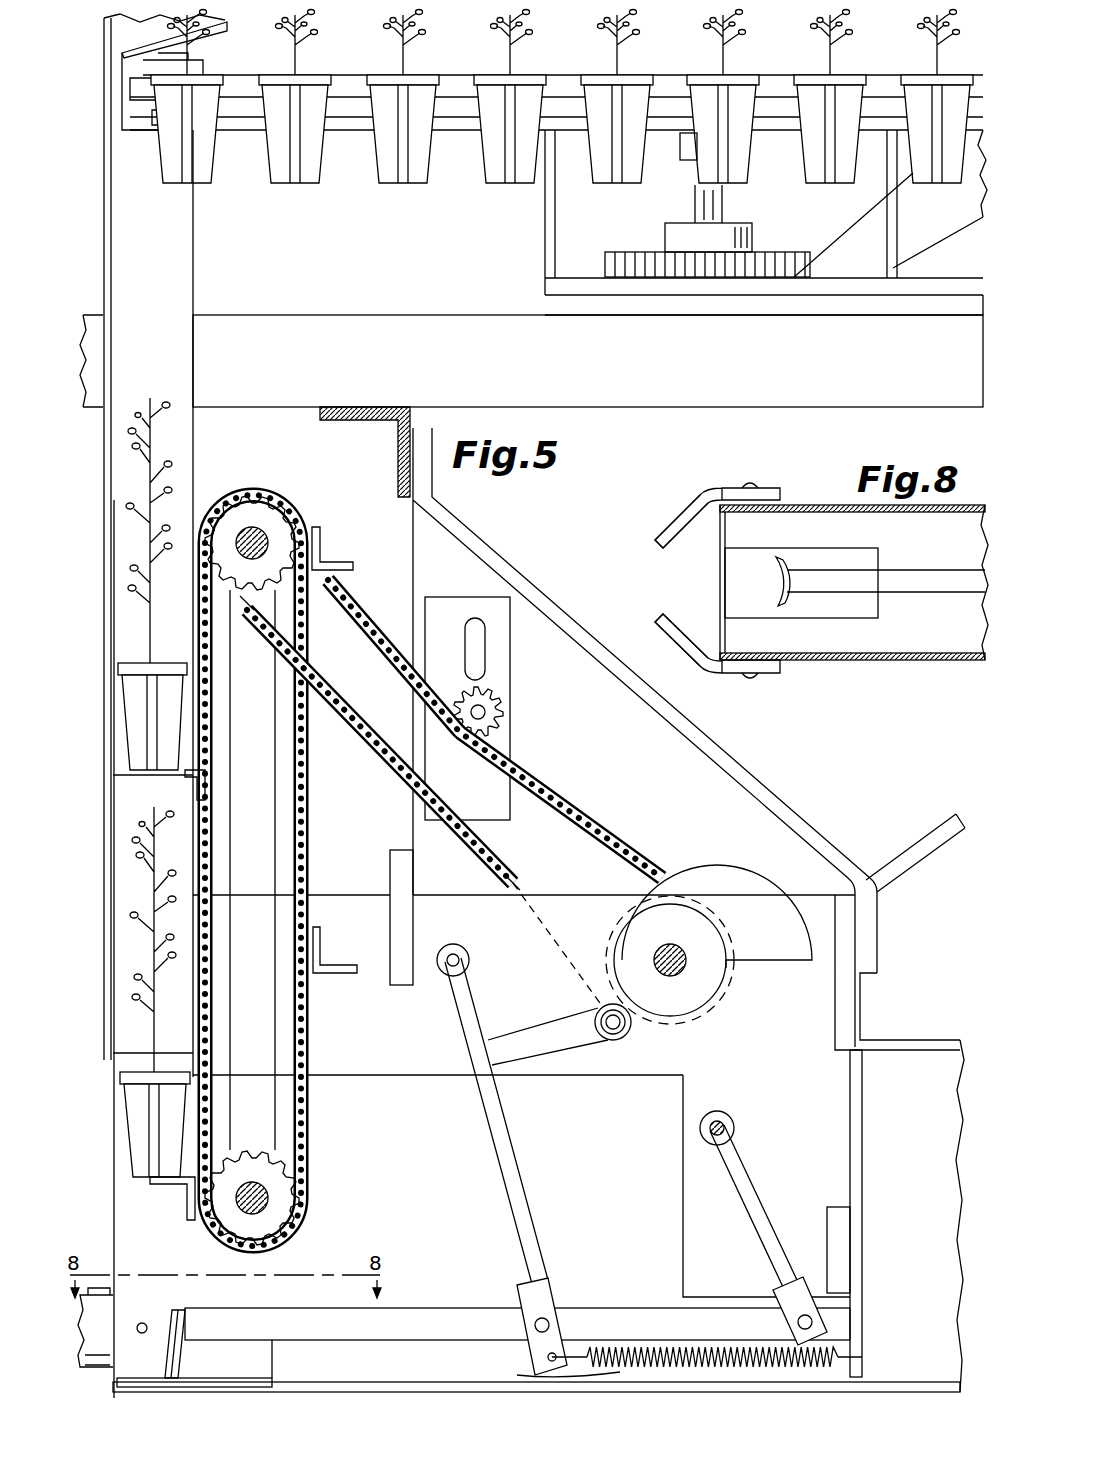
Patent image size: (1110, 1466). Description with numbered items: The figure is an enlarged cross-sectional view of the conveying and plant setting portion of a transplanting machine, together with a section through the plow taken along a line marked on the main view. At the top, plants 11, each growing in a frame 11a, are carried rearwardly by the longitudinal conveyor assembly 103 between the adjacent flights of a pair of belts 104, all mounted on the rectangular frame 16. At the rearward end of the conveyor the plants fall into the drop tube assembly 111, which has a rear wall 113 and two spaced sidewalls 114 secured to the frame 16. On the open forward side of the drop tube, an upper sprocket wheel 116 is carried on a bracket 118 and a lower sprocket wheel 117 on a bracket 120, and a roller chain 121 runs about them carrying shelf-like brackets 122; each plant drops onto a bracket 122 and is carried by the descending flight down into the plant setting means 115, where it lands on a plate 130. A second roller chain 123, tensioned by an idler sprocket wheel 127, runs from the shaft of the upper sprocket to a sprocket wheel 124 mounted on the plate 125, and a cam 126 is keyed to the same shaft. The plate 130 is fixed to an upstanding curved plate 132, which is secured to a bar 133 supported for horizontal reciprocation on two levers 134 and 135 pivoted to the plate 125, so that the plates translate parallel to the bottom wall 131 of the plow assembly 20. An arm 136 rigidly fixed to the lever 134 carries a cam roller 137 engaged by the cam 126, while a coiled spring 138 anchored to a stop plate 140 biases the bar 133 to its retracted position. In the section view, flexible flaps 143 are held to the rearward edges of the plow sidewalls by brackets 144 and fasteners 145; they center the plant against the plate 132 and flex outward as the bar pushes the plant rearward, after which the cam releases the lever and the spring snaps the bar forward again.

In FIG. 5, the longitudinal conveyor assembly 103 is at (355, 66).
In FIG. 5, the belts 104 is at (465, 80).
In FIG. 5, the plant 11 is at (522, 594).
In FIG. 5, the frame 11a is at (510, 185).
In FIG. 5, the drop tube assembly 111 is at (103, 240).
In FIG. 5, the sidewalls 114 is at (193, 276).
In FIG. 5, the frame 16 is at (470, 315).
In FIG. 5, the rear wall 113 is at (110, 512).
In FIG. 5, the sprocket wheel 116 is at (262, 518).
In FIG. 5, the shelf-like brackets 122 is at (345, 563).
In FIG. 5, the plant setting means 115 is at (532, 586).
In FIG. 5, the idler sprocket wheel 127 is at (498, 712).
In FIG. 5, the bracket 118 is at (262, 800).
In FIG. 5, the roller chain 123 is at (545, 790).
In FIG. 5, the roller chain 121 is at (306, 876).
In FIG. 5, the bracket 120 is at (262, 1097).
In FIG. 5, the sprocket wheel 117 is at (290, 1197).
In FIG. 5, the plate 132 is at (168, 1332).
In FIG. 8, the plate 132 is at (775, 575).
In FIG. 5, the plate 130 is at (152, 1380).
In FIG. 8, the plate 130 is at (748, 588).
In FIG. 5, the flexible flaps 143 is at (86, 1350).
In FIG. 8, the flexible flaps 143 is at (680, 525).
In FIG. 5, the bottom wall 131 is at (360, 1386).
In FIG. 8, the bottom wall 131 is at (930, 635).
In FIG. 5, the bar 133 is at (500, 1312).
In FIG. 8, the bar 133 is at (950, 568).
In FIG. 5, the coiled spring 138 is at (545, 1360).
In FIG. 5, the lever 134 is at (510, 1180).
In FIG. 5, the lever 135 is at (745, 1180).
In FIG. 5, the stop plate 140 is at (862, 1332).
In FIG. 5, the arm 136 is at (562, 1020).
In FIG. 5, the cam roller 137 is at (626, 1036).
In FIG. 5, the plate 125 is at (570, 1078).
In FIG. 5, the sprocket wheel 124 is at (630, 910).
In FIG. 5, the cam 126 is at (718, 885).
In FIG. 8, the brackets 144 is at (712, 488).
In FIG. 8, the fasteners 145 is at (752, 485).
In FIG. 8, the plow assembly 20 is at (856, 612).